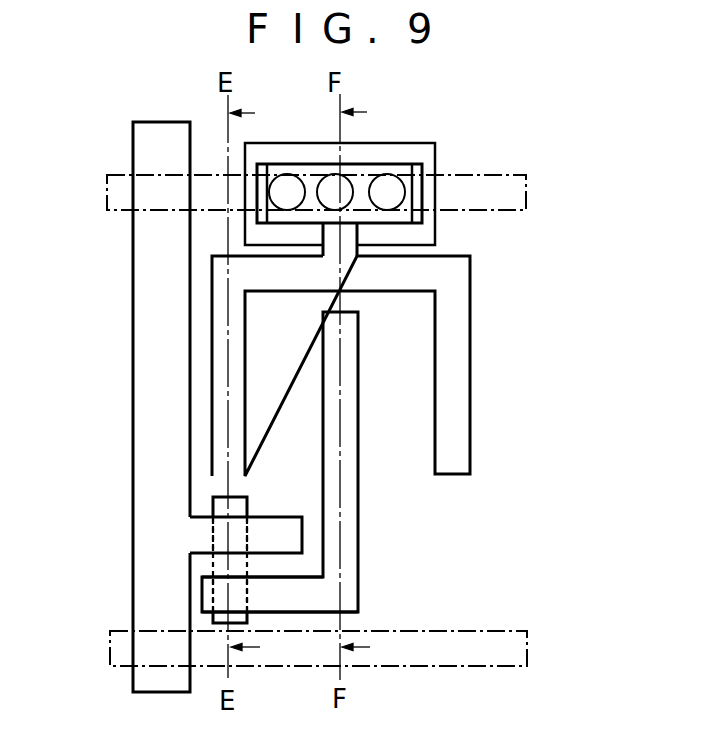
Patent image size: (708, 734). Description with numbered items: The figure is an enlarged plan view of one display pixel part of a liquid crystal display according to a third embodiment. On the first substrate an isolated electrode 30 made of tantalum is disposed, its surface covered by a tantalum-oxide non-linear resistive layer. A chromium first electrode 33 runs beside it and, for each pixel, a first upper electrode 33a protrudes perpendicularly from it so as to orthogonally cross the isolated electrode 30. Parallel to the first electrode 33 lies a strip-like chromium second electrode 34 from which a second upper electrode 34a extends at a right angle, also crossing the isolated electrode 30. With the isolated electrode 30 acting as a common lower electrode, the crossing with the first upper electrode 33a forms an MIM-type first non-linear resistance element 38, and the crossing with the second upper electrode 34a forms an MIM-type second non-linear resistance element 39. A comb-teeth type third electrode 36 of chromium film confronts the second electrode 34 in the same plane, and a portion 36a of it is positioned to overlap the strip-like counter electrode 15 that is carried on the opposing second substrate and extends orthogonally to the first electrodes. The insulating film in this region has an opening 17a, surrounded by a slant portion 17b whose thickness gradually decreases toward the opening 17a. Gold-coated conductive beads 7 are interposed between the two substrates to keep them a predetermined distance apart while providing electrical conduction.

The conductive beads 7 is at (352, 184).
The counter electrode 15 is at (480, 173).
The opening 17a is at (405, 165).
The slant portion 17b is at (297, 152).
The isolated electrode 30 is at (238, 510).
The first electrode 33 is at (145, 402).
The first upper electrode 33a is at (283, 532).
The second electrode 34 is at (350, 452).
The second upper electrode 34a is at (277, 602).
The comb-teeth type third electrode 36 is at (457, 362).
The portion of the third electrode 36a is at (288, 224).
The first non-linear resistance element 38 is at (218, 532).
The second non-linear resistance element 39 is at (216, 594).